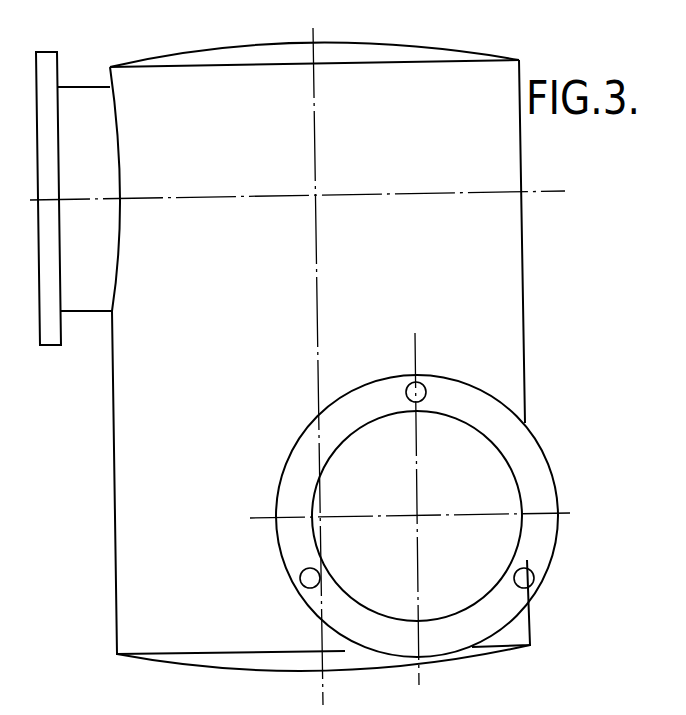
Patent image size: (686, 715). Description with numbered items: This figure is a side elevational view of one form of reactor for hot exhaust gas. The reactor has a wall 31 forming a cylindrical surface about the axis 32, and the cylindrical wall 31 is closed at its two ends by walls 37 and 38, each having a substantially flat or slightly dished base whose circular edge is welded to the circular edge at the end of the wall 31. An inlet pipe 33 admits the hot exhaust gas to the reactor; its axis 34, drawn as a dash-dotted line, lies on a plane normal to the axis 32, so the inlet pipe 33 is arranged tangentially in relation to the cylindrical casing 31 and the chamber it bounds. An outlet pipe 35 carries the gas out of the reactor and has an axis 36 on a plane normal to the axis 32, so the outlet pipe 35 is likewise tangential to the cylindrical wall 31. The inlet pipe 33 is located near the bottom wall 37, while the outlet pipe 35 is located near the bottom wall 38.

The wall 31 is at (115, 580).
The axis 32 is at (316, 263).
The inlet pipe 33 is at (85, 313).
The axis of the inlet pipe 34 is at (218, 196).
The outlet pipe 35 is at (510, 460).
The axis of the outlet pipe 36 is at (418, 515).
The bottom wall 37 is at (488, 46).
The bottom wall 38 is at (229, 668).